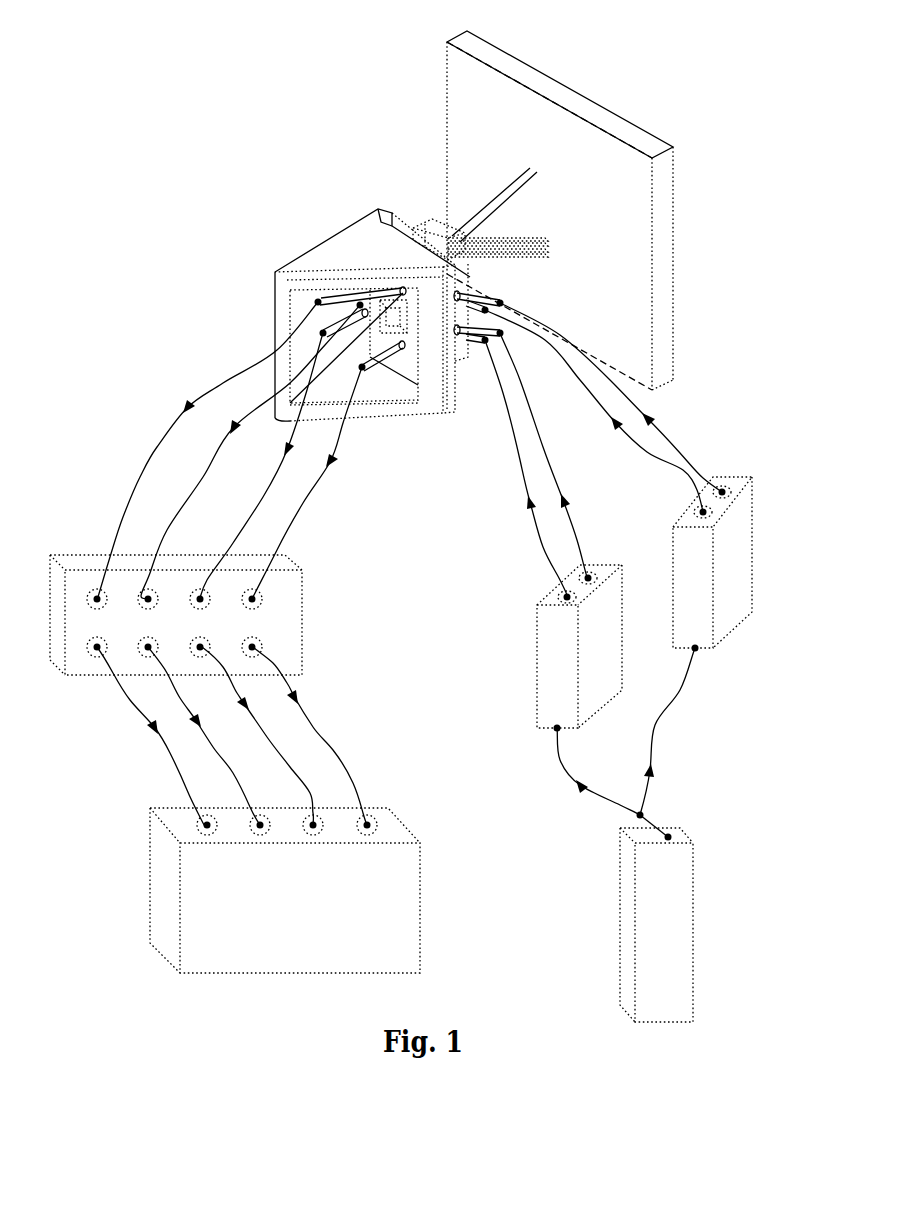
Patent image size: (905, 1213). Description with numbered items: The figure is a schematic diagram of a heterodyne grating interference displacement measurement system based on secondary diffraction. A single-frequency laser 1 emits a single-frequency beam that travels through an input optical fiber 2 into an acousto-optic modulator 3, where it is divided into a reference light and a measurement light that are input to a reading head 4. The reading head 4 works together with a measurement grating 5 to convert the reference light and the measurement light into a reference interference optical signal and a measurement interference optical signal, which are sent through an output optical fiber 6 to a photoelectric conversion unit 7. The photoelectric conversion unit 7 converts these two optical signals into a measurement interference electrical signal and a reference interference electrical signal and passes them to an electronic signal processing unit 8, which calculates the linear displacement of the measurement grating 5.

The single-frequency laser 1 is at (693, 925).
The input optical fiber 2 is at (638, 772).
The acousto-optic modulator 3 is at (572, 603).
The reading head 4 is at (440, 223).
The measurement grating 5 is at (670, 160).
The output optical fiber 6 is at (330, 314).
The photoelectric conversion unit 7 is at (138, 555).
The electronic signal processing unit 8 is at (163, 807).